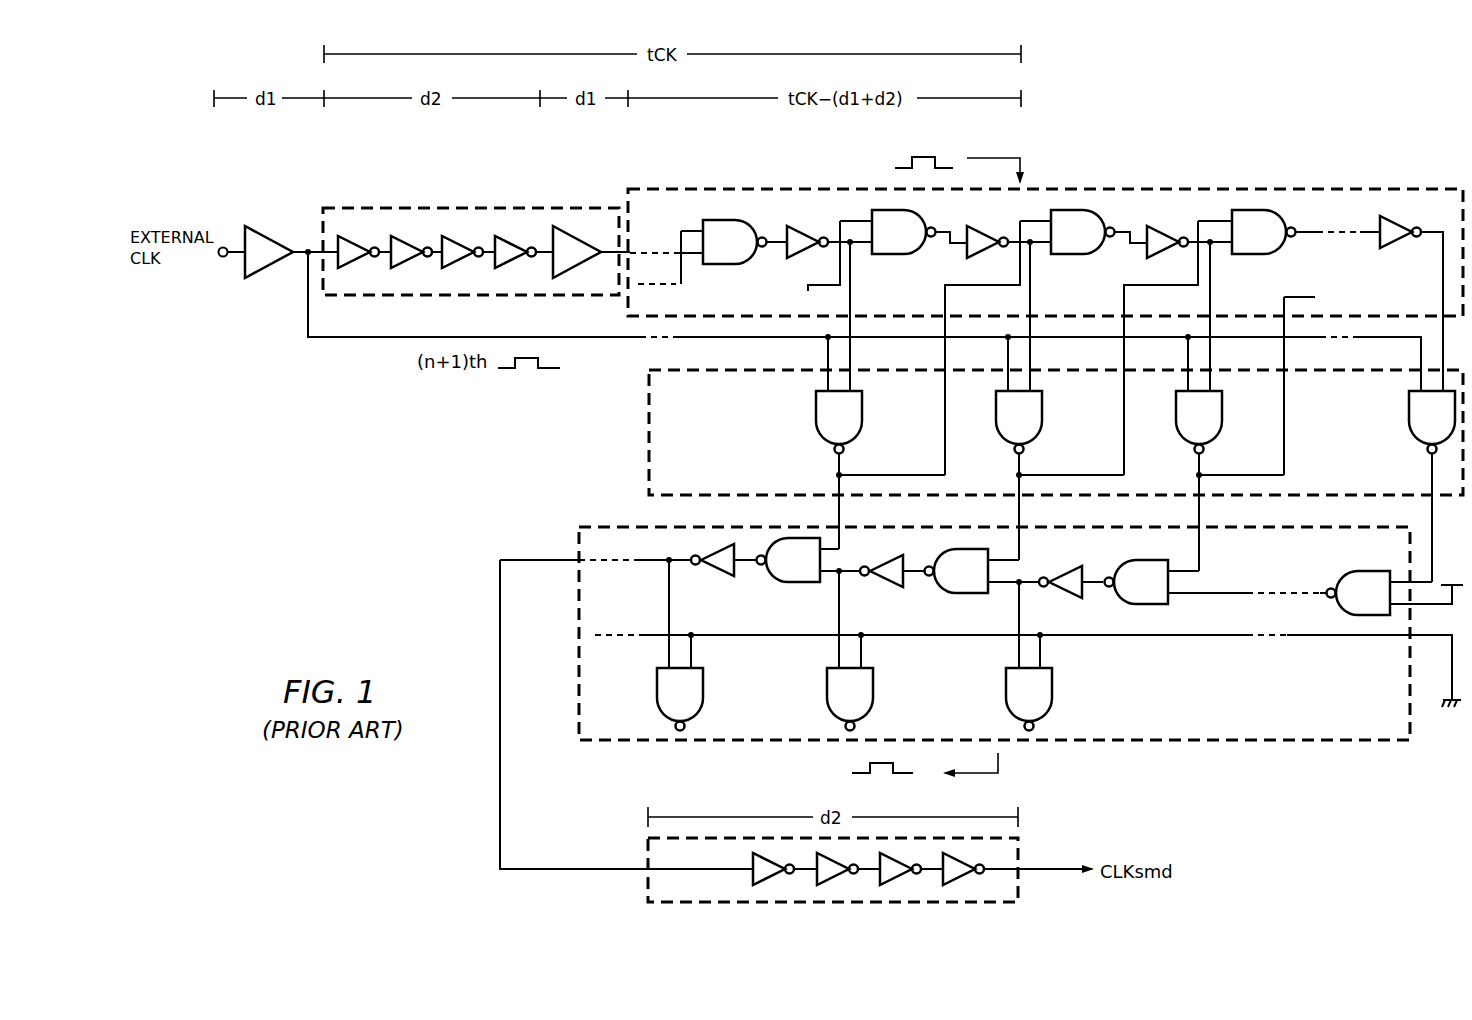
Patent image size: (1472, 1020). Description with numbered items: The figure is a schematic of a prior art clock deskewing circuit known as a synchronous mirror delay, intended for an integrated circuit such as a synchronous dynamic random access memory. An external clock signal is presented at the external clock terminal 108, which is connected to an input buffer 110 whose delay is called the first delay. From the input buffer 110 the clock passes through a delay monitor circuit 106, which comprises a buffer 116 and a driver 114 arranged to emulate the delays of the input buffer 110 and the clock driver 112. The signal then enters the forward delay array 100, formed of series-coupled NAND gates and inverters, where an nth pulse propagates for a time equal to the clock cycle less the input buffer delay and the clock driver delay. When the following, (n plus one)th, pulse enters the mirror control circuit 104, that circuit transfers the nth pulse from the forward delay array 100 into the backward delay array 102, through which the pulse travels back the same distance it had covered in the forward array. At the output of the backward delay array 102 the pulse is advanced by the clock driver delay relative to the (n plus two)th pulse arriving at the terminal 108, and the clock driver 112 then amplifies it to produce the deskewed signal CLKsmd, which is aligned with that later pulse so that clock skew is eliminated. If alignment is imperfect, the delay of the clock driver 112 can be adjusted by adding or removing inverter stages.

The forward delay array 100 is at (1238, 188).
The backward delay array 102 is at (579, 655).
The mirror control circuit 104 is at (649, 432).
The delay monitor circuit 106 is at (471, 228).
The external clock terminal 108 is at (222, 258).
The input buffer 110 is at (273, 233).
The clock driver 112 is at (648, 883).
The driver circuit 114 is at (488, 224).
The buffer circuit 116 is at (587, 223).